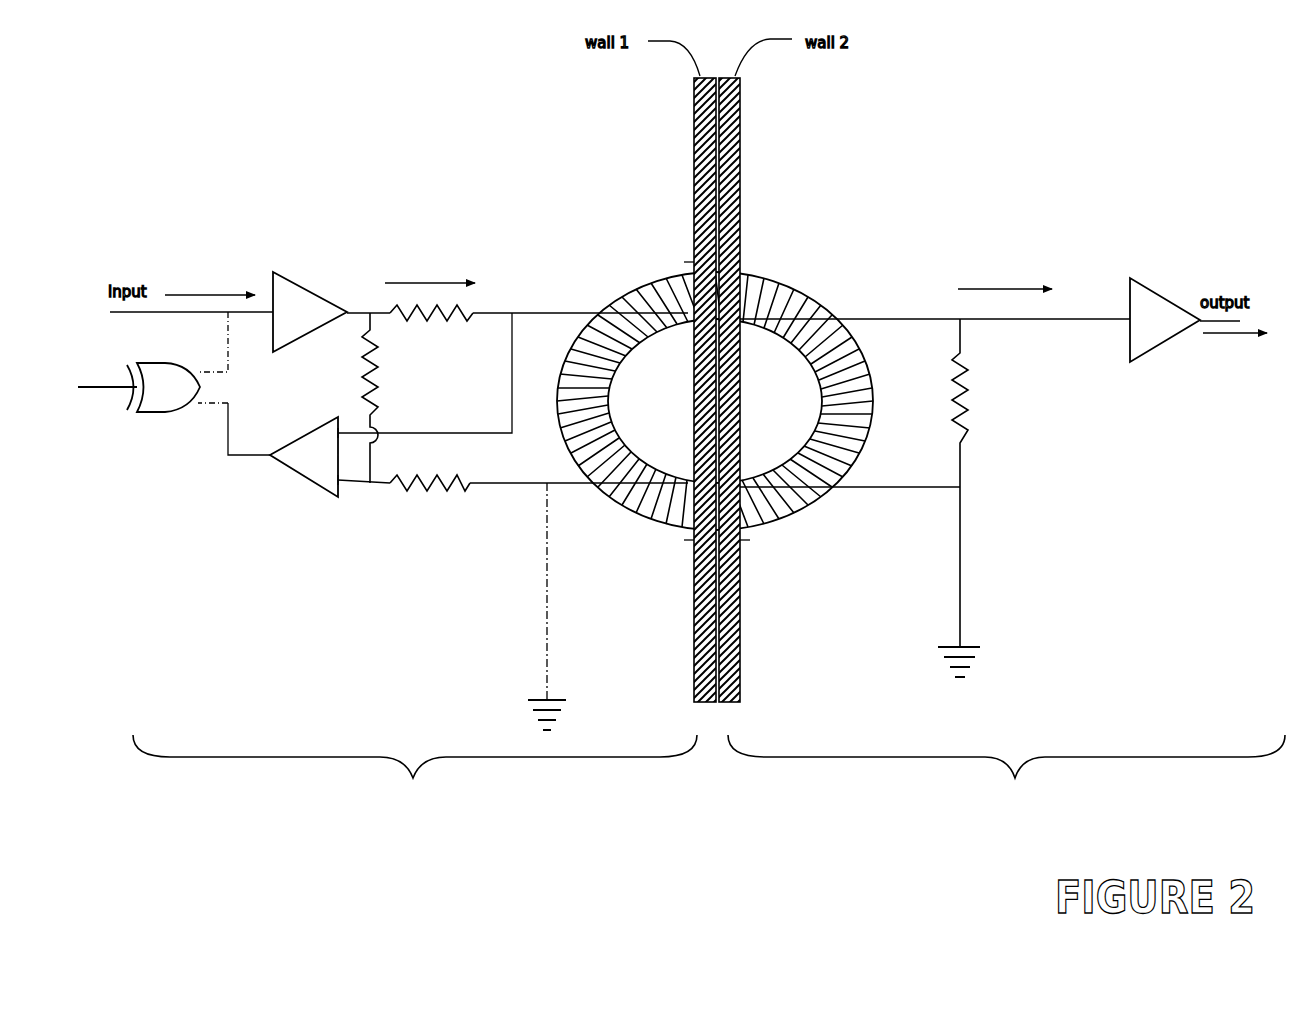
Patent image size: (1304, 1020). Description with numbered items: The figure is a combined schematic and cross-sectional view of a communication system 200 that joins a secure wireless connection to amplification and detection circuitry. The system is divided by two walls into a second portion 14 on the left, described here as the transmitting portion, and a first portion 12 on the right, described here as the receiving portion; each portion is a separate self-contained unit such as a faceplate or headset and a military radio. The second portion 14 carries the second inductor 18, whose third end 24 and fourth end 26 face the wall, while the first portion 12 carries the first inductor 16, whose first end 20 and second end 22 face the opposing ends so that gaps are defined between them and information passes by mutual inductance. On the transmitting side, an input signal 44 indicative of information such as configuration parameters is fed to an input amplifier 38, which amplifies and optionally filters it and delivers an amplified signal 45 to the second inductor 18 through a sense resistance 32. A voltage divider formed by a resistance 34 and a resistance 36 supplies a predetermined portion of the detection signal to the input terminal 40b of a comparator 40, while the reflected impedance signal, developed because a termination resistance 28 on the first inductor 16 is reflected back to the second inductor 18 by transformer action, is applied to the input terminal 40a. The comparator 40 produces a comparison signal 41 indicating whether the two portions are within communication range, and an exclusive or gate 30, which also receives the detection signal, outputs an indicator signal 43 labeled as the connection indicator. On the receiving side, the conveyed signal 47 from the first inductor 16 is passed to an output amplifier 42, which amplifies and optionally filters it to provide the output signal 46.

The communication system 200 is at (402, 62).
The first portion 12 is at (1006, 778).
The second portion 14 is at (415, 779).
The first inductor 16 is at (813, 297).
The second inductor 18 is at (603, 298).
The first end 20 is at (752, 263).
The second end 22 is at (752, 550).
The third end 24 is at (681, 259).
The fourth end 26 is at (681, 550).
The termination resistance 28 is at (967, 392).
The exclusive or gate 30 is at (152, 378).
The sense resistance 32 is at (425, 308).
The resistance 34 is at (373, 373).
The resistance 36 is at (453, 480).
The input amplifier 38 is at (308, 303).
The comparator 40 is at (298, 460).
The input terminal 40a is at (345, 418).
The input terminal 40b is at (347, 493).
The comparison signal 41 is at (245, 457).
The output amplifier 42 is at (1148, 298).
The indicator signal 43 is at (110, 390).
The input signal 44 is at (220, 293).
The amplified signal 45 is at (440, 280).
The output signal 46 is at (1220, 337).
The conveyed signal 47 is at (1013, 287).